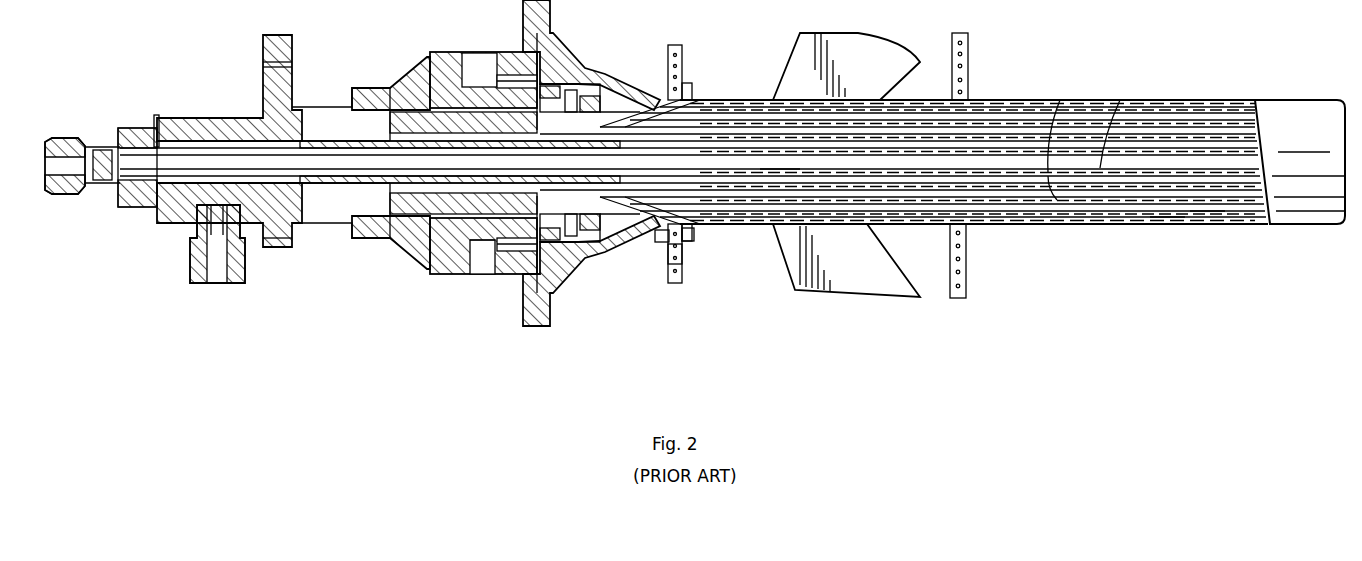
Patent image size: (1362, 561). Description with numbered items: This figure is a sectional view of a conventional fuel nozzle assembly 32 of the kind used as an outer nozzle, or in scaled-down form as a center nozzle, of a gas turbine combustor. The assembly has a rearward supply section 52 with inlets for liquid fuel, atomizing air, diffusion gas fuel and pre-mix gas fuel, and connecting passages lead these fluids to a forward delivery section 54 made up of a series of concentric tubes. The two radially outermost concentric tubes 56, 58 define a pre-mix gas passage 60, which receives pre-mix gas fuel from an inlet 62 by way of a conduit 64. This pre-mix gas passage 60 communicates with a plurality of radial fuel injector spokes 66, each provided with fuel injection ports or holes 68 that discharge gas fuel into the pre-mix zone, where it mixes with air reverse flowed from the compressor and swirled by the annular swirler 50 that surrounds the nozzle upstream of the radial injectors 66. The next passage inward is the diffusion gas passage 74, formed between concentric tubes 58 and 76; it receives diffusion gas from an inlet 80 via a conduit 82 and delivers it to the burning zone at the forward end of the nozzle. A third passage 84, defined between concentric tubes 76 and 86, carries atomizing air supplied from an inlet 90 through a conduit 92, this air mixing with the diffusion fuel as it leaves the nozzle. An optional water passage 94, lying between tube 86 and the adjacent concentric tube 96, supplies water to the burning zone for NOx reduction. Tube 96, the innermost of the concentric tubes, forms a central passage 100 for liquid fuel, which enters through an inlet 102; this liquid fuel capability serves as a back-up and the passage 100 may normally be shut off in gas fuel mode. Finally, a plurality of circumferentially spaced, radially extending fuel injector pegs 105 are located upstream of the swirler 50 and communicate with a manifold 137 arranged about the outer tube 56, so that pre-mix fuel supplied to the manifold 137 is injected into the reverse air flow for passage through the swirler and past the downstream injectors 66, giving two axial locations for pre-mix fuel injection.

The fuel nozzle assembly 32 is at (640, 316).
The annular swirler 50 is at (825, 46).
The rearward supply section 52 is at (420, 290).
The forward delivery section 54 is at (1104, 230).
The outer concentric tube 56 is at (1167, 224).
The concentric tube 58 is at (1207, 213).
The pre-mix gas passage 60 is at (672, 87).
The pre-mix gas inlet 62 is at (477, 63).
The conduit 64 is at (553, 78).
The radial fuel injector spokes 66 is at (948, 60).
The fuel injection ports 68 is at (962, 88).
The diffusion gas passage 74 is at (717, 125).
The concentric tube 76 is at (1057, 200).
The diffusion gas inlet 80 is at (413, 72).
The conduit 82 is at (462, 112).
The atomizing air passage 84 is at (742, 180).
The concentric tube 86 is at (1060, 100).
The atomizing air inlet 90 is at (311, 118).
The conduit 92 is at (385, 117).
The water passage 94 is at (697, 180).
The innermost tube 96 is at (1120, 100).
The central passage 100 is at (780, 163).
The liquid fuel inlet 102 is at (70, 178).
The fuel injector pegs 105 is at (680, 262).
The manifold 137 is at (688, 241).